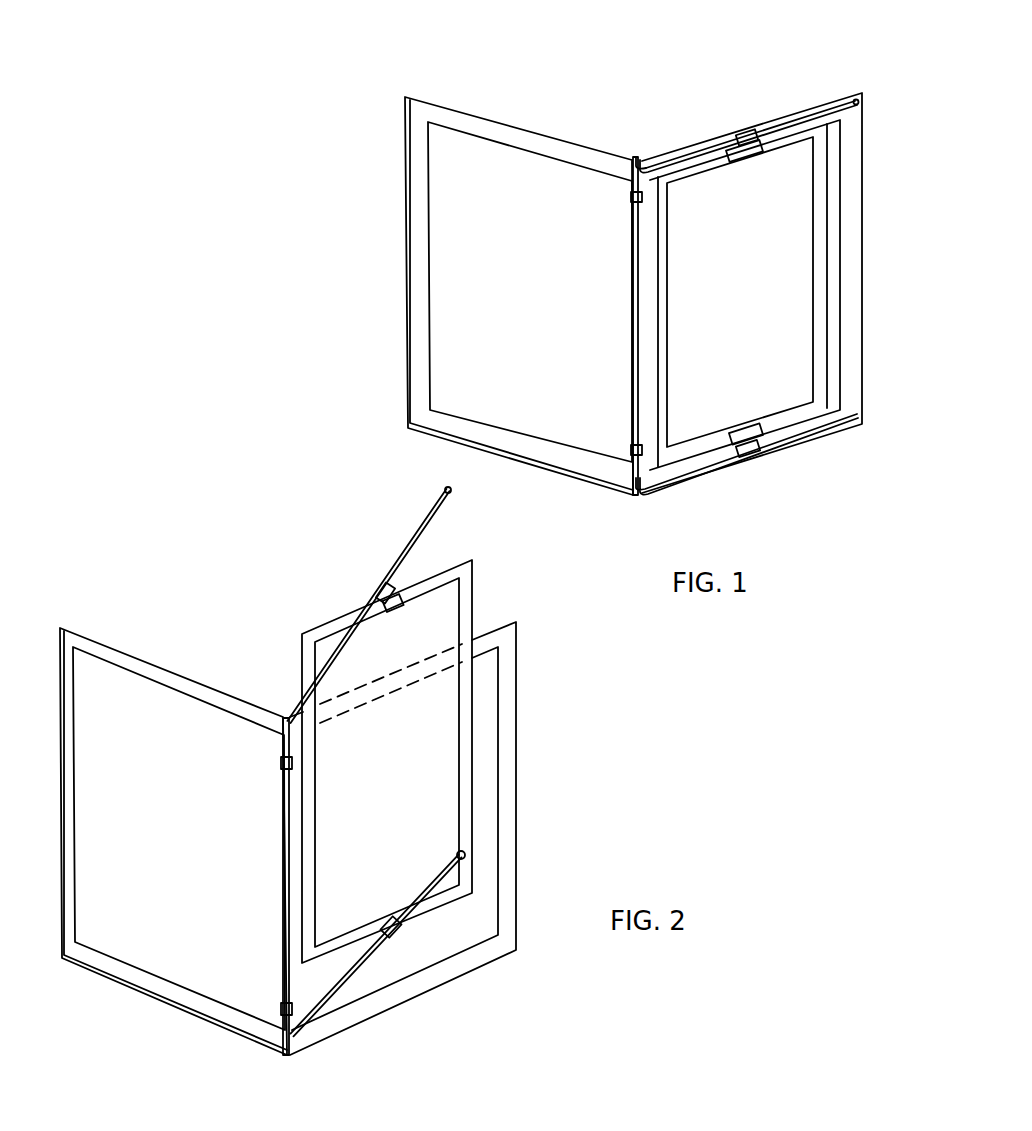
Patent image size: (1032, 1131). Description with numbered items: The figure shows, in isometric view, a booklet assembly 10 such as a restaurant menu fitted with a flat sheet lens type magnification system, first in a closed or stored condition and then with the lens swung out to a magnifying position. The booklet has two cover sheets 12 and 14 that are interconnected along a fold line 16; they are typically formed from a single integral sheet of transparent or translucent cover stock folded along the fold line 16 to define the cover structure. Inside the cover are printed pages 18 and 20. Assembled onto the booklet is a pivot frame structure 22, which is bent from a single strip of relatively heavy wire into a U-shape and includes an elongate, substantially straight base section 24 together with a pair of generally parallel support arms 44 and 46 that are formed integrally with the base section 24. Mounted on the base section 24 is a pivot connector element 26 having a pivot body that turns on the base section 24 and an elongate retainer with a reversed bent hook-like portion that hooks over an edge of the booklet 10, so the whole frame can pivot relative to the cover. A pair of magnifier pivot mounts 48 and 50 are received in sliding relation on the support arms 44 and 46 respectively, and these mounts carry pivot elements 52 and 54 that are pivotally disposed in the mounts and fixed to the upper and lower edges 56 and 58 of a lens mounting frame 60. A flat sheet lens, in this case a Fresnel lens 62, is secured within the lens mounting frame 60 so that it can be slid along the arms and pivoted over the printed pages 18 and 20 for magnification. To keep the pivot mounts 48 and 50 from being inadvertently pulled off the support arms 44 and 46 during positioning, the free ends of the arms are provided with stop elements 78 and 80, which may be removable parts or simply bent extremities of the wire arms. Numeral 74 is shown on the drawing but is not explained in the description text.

In FIG. 1, the booklet assembly 10 is at (751, 88).
In FIG. 1, the cover sheet 12 is at (445, 115).
In FIG. 2, the cover sheet 12 is at (115, 657).
In FIG. 1, the cover sheet 14 is at (852, 232).
In FIG. 1, the fold line 16 is at (636, 158).
In FIG. 1, the printed page 18 is at (452, 210).
In FIG. 2, the printed page 18 is at (150, 712).
In FIG. 1, the printed page 20 is at (836, 143).
In FIG. 2, the printed page 20 is at (500, 660).
In FIG. 1, the pivot frame structure 22 is at (657, 492).
In FIG. 1, the base section 24 is at (633, 320).
In FIG. 2, the base section 24 is at (283, 838).
In FIG. 1, the pivot connector element 26 is at (631, 197).
In FIG. 2, the pivot connector element 26 is at (282, 764).
In FIG. 1, the support arm 44 is at (665, 165).
In FIG. 2, the support arm 44 is at (396, 560).
In FIG. 1, the support arm 46 is at (690, 462).
In FIG. 2, the support arm 46 is at (355, 968).
In FIG. 1, the magnifier pivot mount 48 is at (745, 130).
In FIG. 2, the magnifier pivot mount 48 is at (380, 590).
In FIG. 1, the magnifier pivot mount 50 is at (752, 455).
In FIG. 1, the pivot element 52 is at (726, 173).
In FIG. 2, the pivot element 52 is at (405, 592).
In FIG. 1, the pivot element 54 is at (745, 425).
In FIG. 1, the upper edge 56 is at (786, 138).
In FIG. 2, the upper edge 56 is at (452, 577).
In FIG. 1, the lower edge 58 is at (806, 410).
In FIG. 2, the lower edge 58 is at (453, 897).
In FIG. 1, the lens mounting frame 60 is at (822, 316).
In FIG. 1, the Fresnel lens 62 is at (790, 378).
In FIG. 1, the clip member 74 is at (762, 194).
In FIG. 2, the clip member 74 is at (396, 602).
In FIG. 2, the stop element 78 is at (444, 490).
In FIG. 2, the stop element 80 is at (470, 852).